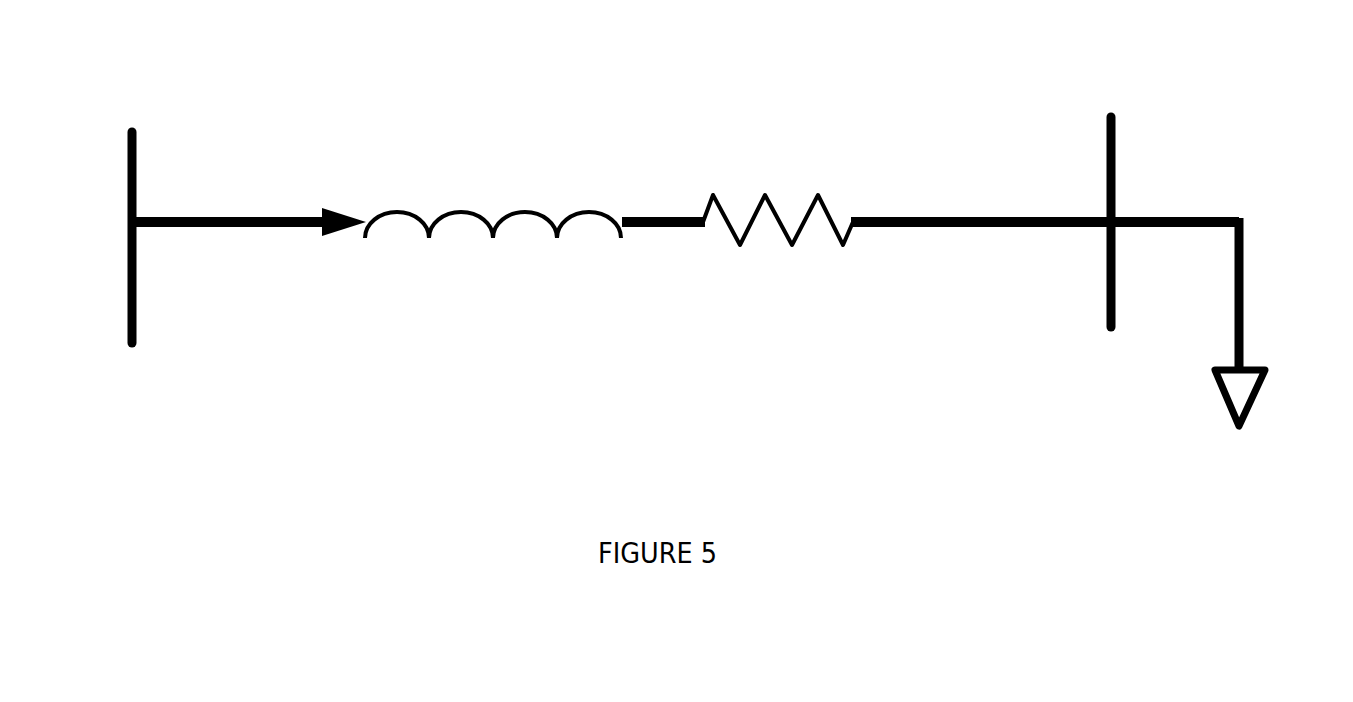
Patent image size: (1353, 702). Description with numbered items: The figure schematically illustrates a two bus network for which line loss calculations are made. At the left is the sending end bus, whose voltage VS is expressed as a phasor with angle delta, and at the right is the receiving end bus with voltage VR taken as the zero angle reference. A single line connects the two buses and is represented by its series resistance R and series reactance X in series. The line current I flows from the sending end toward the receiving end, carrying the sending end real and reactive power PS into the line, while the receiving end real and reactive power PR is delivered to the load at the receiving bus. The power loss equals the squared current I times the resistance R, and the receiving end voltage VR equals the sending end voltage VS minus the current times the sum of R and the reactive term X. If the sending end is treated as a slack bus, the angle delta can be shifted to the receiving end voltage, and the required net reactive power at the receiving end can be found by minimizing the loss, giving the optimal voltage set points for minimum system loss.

The sending end voltage VS is at (178, 70).
The receiving end voltage VR is at (1151, 70).
The line current I is at (288, 275).
The sending end real and reactive power PS is at (256, 179).
The receiving end real and reactive power PR is at (1238, 295).
The line reactance X is at (493, 189).
The line resistance R is at (778, 193).